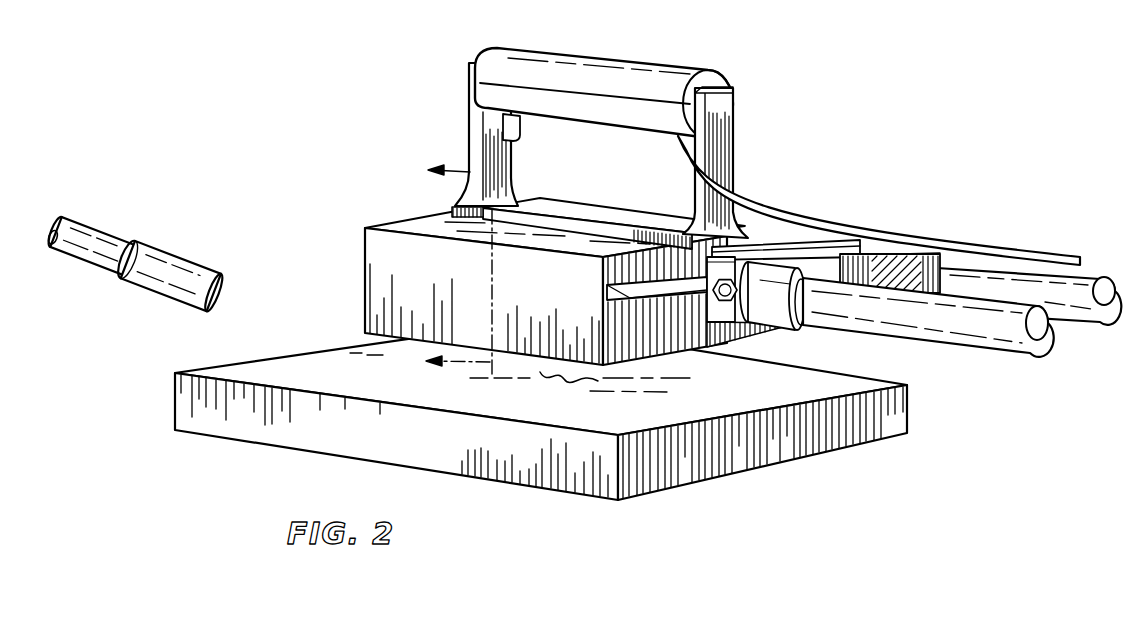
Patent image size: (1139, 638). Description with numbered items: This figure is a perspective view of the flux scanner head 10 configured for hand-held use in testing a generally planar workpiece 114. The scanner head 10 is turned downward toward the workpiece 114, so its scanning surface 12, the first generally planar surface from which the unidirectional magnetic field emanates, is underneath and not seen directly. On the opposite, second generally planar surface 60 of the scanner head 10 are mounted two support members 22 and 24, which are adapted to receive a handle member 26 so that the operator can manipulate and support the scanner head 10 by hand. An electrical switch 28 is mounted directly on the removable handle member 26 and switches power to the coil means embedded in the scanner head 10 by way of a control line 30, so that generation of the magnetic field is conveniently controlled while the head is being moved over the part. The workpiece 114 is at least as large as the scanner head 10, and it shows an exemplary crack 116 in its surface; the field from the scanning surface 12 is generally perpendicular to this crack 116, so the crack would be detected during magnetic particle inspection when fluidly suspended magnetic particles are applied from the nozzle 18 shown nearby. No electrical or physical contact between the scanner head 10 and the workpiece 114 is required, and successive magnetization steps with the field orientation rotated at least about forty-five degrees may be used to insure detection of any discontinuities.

The scanner head 10 is at (648, 282).
The scanning surface 12 is at (737, 345).
The nozzle 18 is at (163, 265).
The support member 22 is at (495, 155).
The support member 24 is at (720, 105).
The handle member 26 is at (590, 77).
The electrical switch 28 is at (512, 125).
The control line 30 is at (762, 205).
The second generally planar surface 60 is at (422, 227).
The workpiece 114 is at (680, 463).
The crack 116 is at (570, 385).